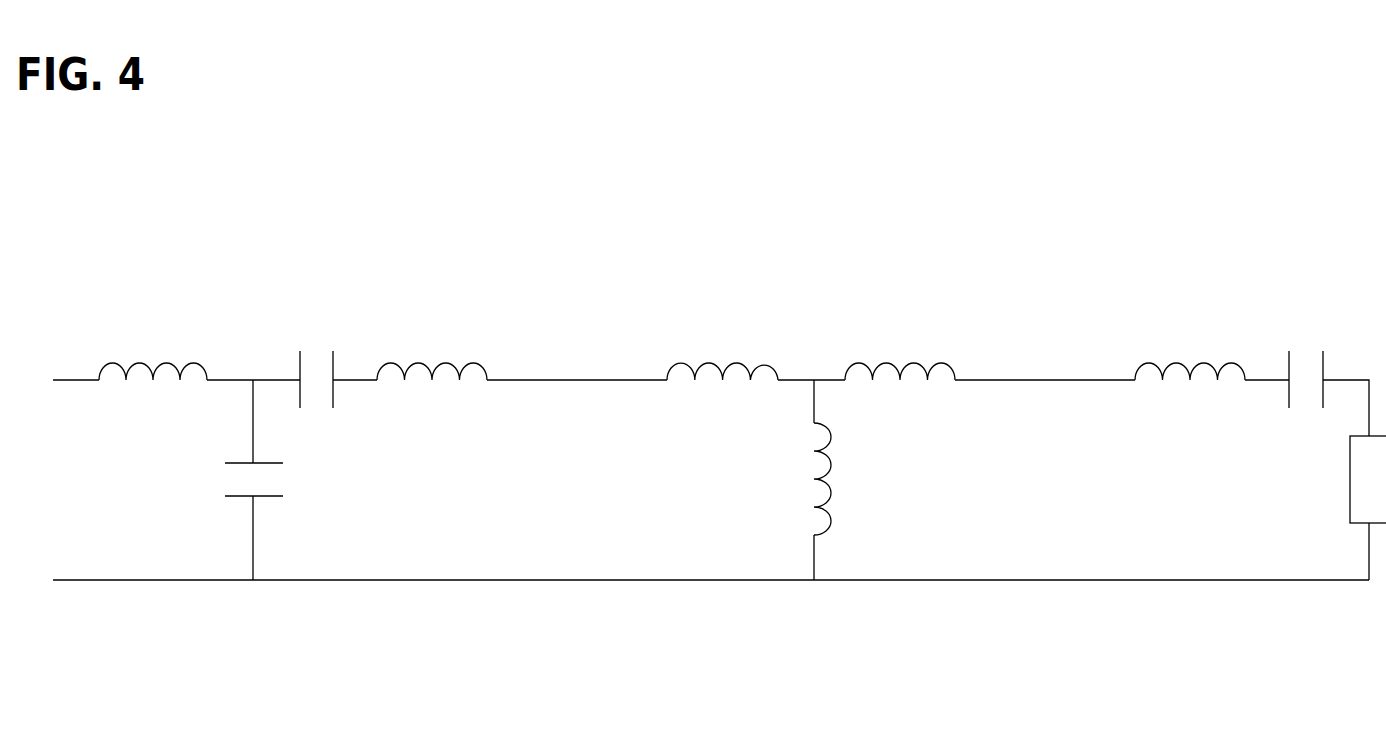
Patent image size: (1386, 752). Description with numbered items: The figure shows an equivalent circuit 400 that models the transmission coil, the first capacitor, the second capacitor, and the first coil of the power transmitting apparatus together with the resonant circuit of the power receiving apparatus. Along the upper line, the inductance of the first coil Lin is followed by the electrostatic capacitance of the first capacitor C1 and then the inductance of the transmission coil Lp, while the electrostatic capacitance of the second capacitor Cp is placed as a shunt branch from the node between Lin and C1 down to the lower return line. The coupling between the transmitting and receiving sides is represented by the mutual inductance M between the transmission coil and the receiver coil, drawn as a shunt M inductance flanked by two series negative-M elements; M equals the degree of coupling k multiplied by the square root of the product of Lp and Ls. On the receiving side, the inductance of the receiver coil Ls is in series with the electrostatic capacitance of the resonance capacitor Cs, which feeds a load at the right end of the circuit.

The equivalent circuit 400 is at (719, 517).
The inductance of the first coil Lin is at (153, 347).
The electrostatic capacitance of the first capacitor C1 is at (316, 360).
The inductance of the transmission coil Lp is at (432, 346).
The mutual inductance M is at (811, 446).
The inductance of the receiver coil Ls is at (1190, 346).
The electrostatic capacitance of the resonance capacitor Cs is at (1306, 360).
The electrostatic capacitance of the second capacitor Cp is at (273, 480).